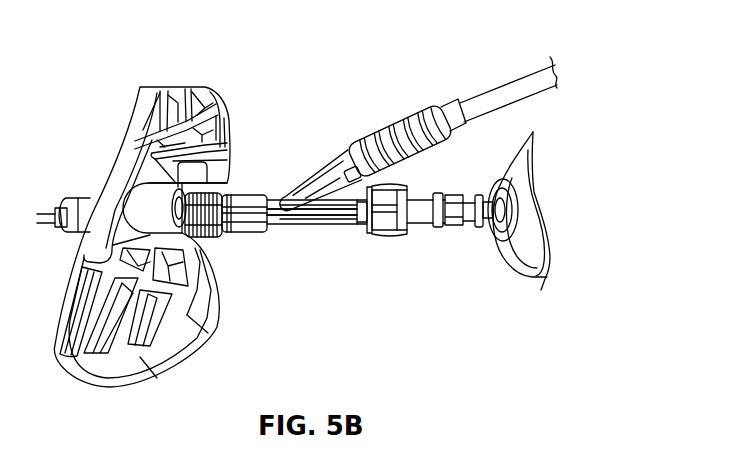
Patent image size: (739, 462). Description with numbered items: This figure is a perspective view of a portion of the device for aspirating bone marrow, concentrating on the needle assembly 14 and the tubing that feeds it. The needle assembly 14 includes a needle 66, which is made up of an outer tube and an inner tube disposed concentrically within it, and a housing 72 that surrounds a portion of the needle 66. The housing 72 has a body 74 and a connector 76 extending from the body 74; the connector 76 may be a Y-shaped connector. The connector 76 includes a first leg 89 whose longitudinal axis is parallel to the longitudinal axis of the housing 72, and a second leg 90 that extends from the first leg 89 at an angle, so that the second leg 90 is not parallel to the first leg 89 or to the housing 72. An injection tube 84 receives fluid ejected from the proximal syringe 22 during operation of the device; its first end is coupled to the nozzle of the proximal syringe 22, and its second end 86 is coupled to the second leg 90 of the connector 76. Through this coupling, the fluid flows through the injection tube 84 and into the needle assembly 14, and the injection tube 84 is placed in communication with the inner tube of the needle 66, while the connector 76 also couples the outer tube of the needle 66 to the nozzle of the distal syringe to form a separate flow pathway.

The needle assembly 14 is at (320, 80).
The proximal syringe 22 is at (520, 291).
The needle 66 is at (40, 215).
The housing 72 is at (252, 246).
The body 74 is at (220, 234).
The connector 76 is at (365, 233).
The injection tube 84 is at (543, 90).
The second end 86 is at (492, 91).
The first leg 89 is at (288, 227).
The second leg 90 is at (327, 178).